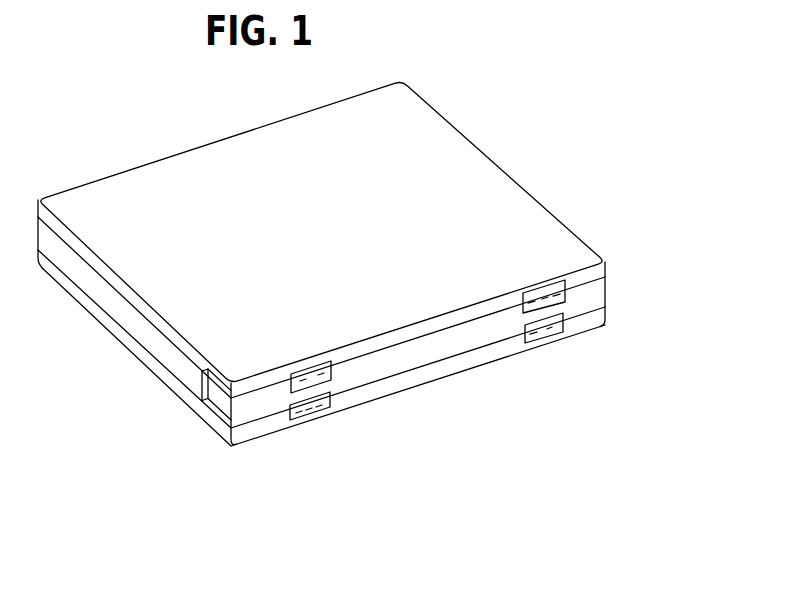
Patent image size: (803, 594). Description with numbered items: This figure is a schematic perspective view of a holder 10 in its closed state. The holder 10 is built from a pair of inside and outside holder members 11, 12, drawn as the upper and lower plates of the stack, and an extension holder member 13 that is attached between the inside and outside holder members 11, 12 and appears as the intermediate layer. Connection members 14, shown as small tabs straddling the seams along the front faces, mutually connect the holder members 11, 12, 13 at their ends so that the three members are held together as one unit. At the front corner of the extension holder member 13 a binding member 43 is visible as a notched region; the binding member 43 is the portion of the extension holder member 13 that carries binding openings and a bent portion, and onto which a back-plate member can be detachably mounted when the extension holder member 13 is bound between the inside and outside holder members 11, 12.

The holder 10 is at (156, 142).
The inside holder member 11 is at (432, 150).
The outside holder member 12 is at (440, 381).
The extension holder member 13 is at (115, 309).
The connection members 14 is at (306, 371).
The binding member 43 is at (220, 410).